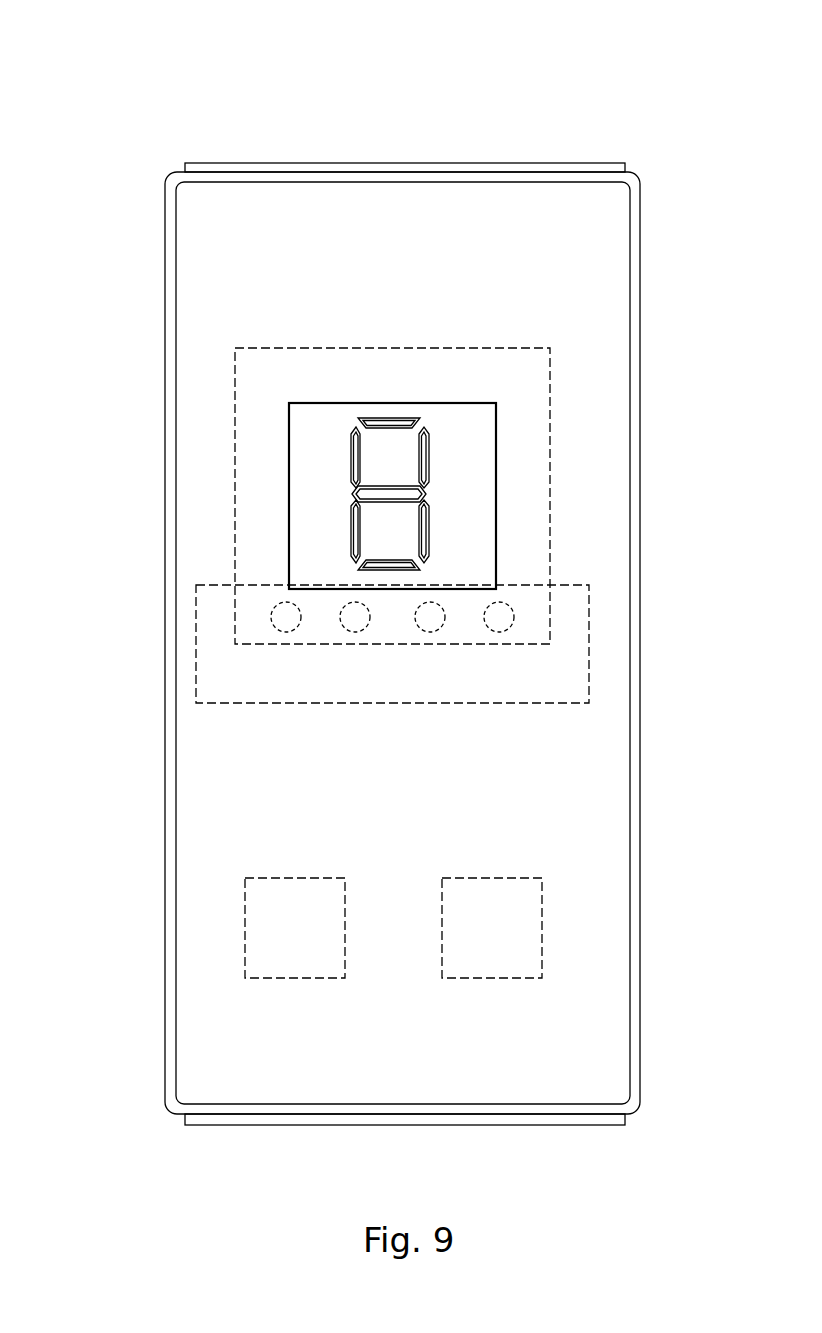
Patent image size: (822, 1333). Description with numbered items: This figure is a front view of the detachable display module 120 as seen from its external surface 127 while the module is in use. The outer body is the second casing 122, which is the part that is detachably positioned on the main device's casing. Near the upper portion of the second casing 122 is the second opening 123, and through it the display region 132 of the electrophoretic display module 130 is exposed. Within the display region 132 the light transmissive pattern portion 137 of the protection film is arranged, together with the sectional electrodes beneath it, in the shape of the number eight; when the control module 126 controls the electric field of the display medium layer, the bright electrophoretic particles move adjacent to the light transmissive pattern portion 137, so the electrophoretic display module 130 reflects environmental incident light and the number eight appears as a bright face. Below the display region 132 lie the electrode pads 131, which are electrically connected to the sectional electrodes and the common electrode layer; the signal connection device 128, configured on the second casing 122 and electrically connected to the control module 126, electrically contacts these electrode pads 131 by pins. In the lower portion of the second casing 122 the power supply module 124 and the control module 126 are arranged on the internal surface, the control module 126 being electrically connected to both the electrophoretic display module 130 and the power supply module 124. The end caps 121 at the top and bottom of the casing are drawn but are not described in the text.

The detachable display module 120 is at (68, 24).
The housing end cap 121 is at (401, 163).
The second casing 122 is at (210, 828).
The second opening 123 is at (277, 497).
The power supply module 124 is at (520, 943).
The control module 126 is at (270, 943).
The external surface 127 is at (572, 828).
The signal connection device 128 is at (573, 628).
The electrophoretic display module 130 is at (550, 390).
The electrode pads 131 is at (500, 617).
The display region 132 is at (472, 498).
The light transmissive pattern portion 137 is at (336, 448).